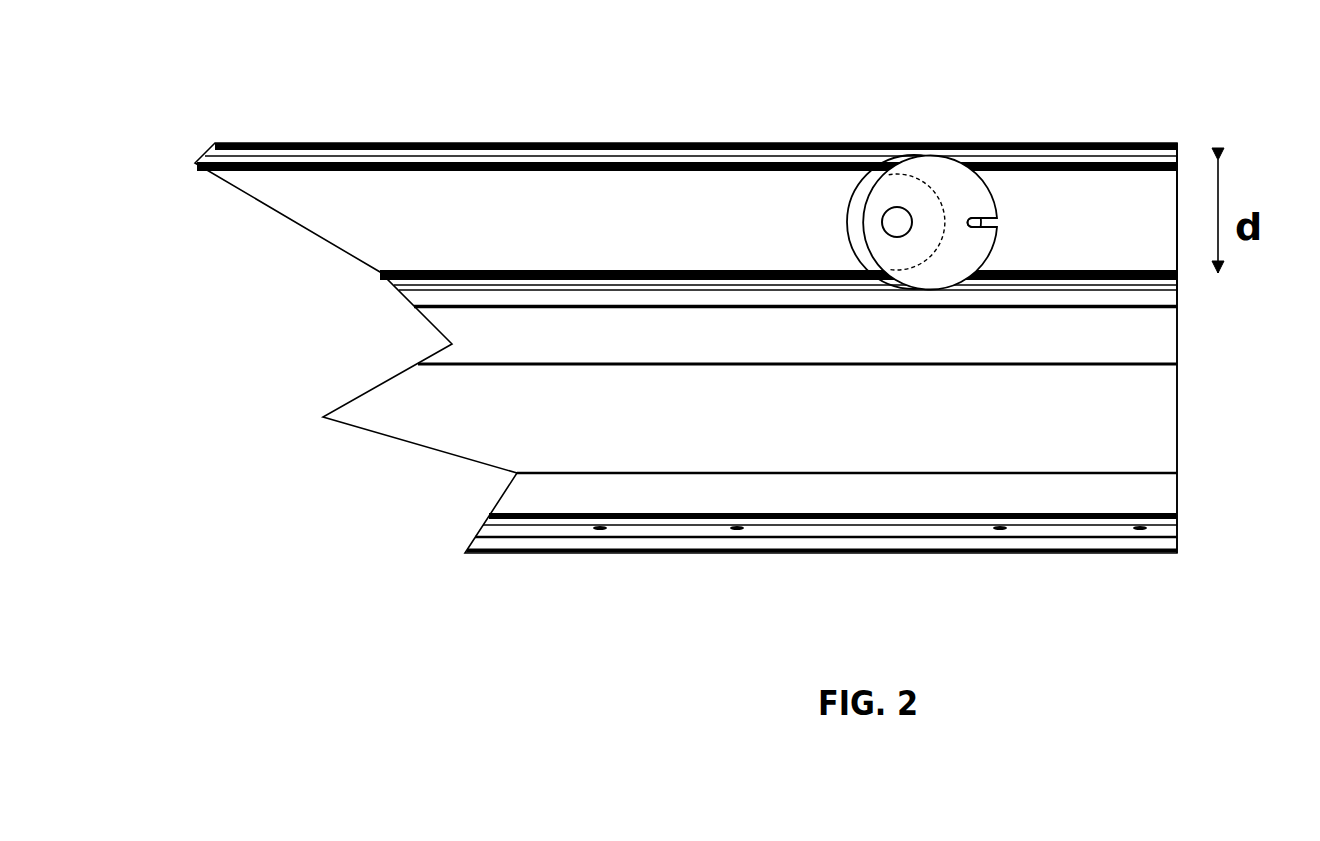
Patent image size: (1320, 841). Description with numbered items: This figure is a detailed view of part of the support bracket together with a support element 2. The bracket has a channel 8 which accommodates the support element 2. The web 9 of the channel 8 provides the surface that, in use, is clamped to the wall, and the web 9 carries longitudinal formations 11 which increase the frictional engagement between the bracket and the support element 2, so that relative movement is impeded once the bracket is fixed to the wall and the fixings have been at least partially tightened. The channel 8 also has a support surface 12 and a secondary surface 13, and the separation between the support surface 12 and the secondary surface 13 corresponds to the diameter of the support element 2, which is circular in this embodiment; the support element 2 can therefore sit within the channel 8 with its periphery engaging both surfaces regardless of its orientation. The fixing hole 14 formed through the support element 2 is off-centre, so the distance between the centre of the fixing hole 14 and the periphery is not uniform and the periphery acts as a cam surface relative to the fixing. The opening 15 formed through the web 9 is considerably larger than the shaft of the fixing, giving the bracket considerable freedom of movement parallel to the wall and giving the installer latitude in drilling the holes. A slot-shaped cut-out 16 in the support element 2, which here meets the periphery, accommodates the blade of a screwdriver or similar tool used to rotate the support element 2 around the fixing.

The support element 2 is at (937, 165).
The channel 8 is at (1182, 247).
The web 9 is at (355, 207).
The longitudinal formations 11 is at (1158, 270).
The support surface 12 is at (475, 150).
The secondary surface 13 is at (413, 287).
The fixing hole 14 is at (890, 217).
The opening 15 is at (845, 227).
The slot-shaped cut-out 16 is at (983, 212).